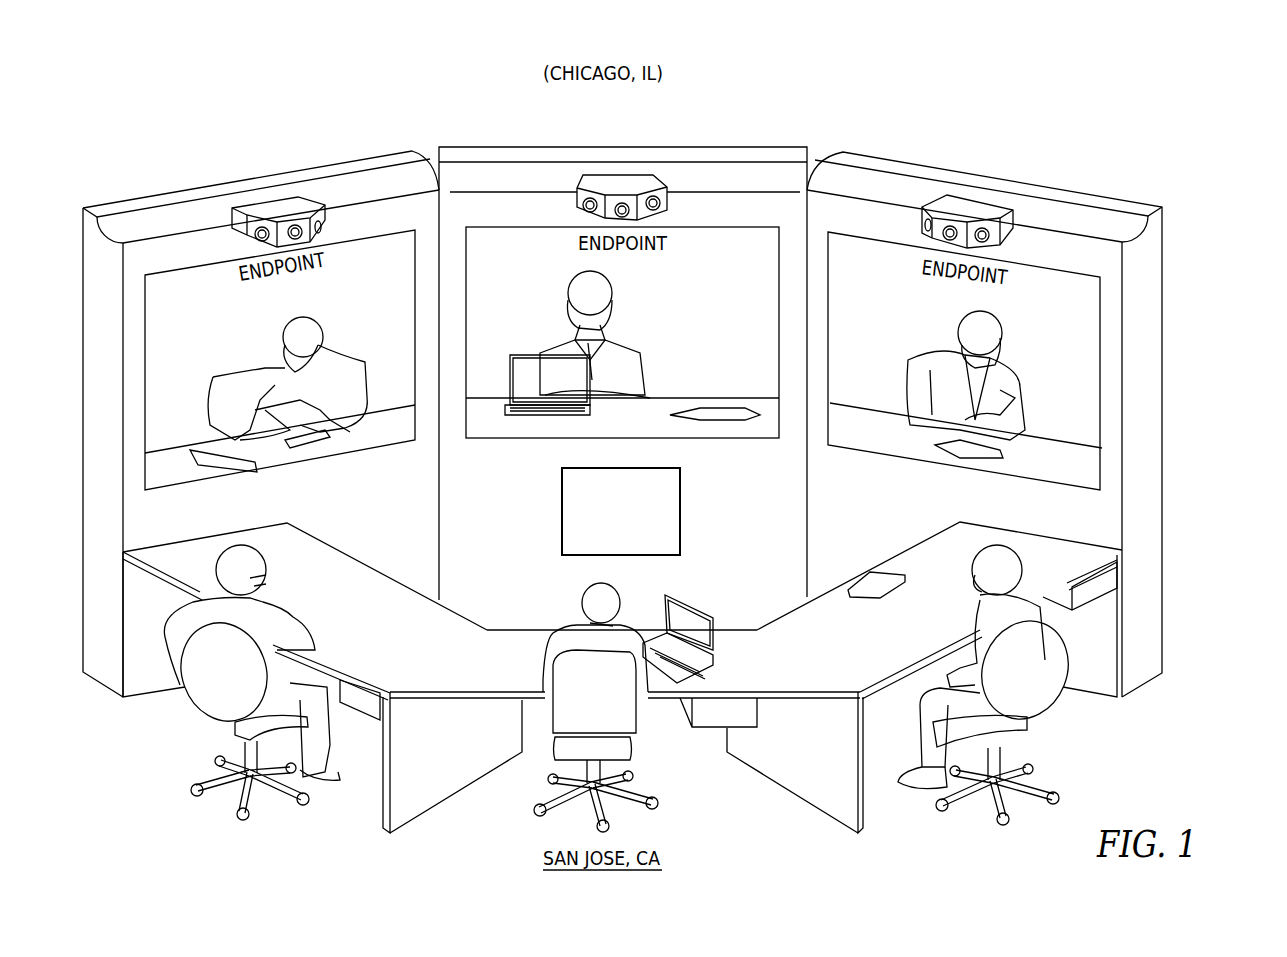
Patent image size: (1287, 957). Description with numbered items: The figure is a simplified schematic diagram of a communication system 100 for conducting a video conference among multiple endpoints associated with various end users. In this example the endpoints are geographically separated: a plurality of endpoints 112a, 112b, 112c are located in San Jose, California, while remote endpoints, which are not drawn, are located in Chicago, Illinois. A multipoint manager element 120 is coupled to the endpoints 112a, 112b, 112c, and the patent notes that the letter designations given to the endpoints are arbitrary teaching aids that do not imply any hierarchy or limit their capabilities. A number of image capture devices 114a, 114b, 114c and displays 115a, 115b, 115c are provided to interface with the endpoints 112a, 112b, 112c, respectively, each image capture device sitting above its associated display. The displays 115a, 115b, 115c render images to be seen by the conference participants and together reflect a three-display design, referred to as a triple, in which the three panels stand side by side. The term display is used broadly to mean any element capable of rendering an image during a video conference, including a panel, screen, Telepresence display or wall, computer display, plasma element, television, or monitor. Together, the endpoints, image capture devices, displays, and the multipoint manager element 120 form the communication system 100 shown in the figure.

The communication system 100 is at (150, 122).
The endpoint 112a is at (367, 720).
The endpoint 112b is at (713, 718).
The endpoint 112c is at (1103, 582).
The image capture device 114a is at (258, 208).
The image capture device 114b is at (636, 178).
The image capture device 114c is at (988, 208).
The display 115a is at (233, 348).
The display 115b is at (719, 312).
The display 115c is at (1077, 347).
The multipoint manager element 120 is at (681, 510).